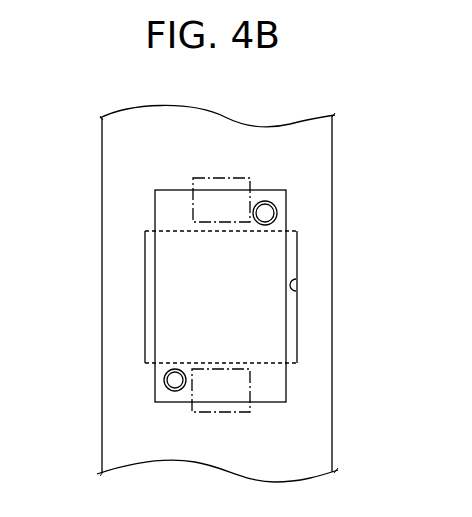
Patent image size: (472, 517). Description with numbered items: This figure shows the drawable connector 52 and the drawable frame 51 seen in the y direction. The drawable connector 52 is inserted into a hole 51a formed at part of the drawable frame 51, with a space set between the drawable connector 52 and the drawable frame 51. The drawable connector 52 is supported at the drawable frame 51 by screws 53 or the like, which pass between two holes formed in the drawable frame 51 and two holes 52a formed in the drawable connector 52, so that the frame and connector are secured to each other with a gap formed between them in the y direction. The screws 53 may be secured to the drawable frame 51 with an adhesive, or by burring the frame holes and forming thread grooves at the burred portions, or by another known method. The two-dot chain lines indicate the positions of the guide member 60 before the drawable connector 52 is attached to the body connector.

The plate 51 is at (106, 158).
The opening 51a is at (297, 296).
The cover member 52 is at (286, 214).
The hole 52a is at (262, 207).
The screw 53 is at (270, 205).
The connector 60 is at (238, 414).